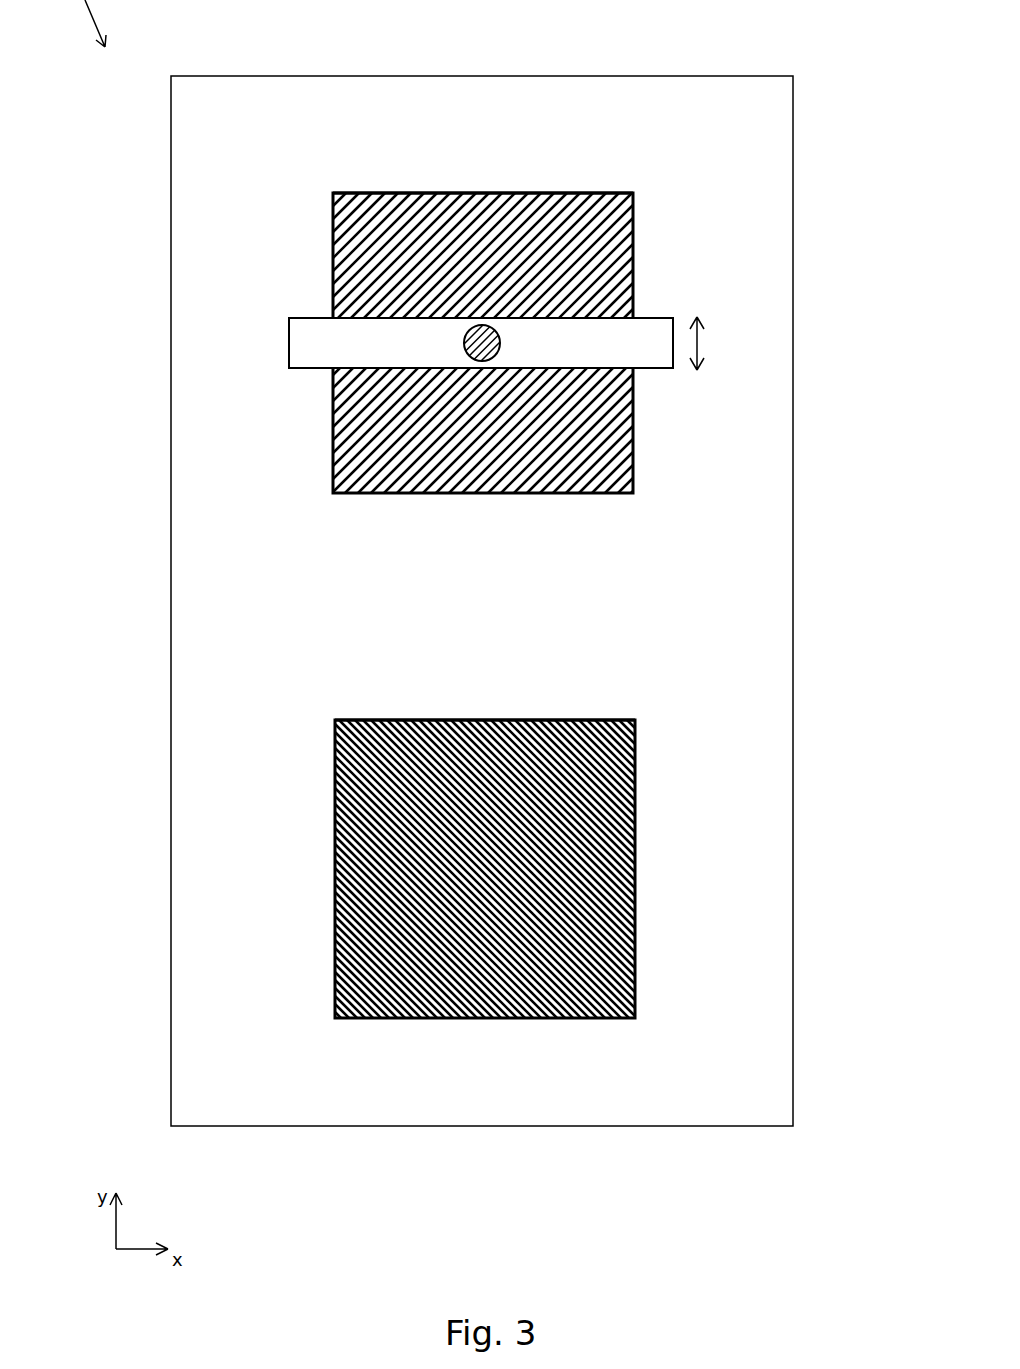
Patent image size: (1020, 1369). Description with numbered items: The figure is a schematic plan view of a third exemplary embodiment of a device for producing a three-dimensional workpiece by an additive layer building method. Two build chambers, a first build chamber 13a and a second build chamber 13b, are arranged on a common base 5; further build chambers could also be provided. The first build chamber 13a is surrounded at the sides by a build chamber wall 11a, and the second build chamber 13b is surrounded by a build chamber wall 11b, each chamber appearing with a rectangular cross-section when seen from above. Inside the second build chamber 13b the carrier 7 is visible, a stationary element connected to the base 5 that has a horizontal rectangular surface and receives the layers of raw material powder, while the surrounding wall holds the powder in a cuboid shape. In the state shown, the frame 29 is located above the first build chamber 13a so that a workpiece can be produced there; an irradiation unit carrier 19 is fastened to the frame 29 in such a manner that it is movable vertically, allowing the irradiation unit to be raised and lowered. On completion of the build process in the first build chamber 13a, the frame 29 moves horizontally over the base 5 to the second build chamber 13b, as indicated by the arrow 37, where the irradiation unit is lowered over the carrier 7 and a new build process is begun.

The base 5 is at (196, 112).
The build chamber wall 11a is at (367, 193).
The first build chamber 13a is at (498, 320).
The irradiation unit carrier 19 is at (347, 442).
The frame 29 is at (651, 356).
The arrow 37 is at (699, 342).
The build chamber wall 11b is at (370, 720).
The second build chamber 13b is at (535, 841).
The carrier 7 is at (613, 833).